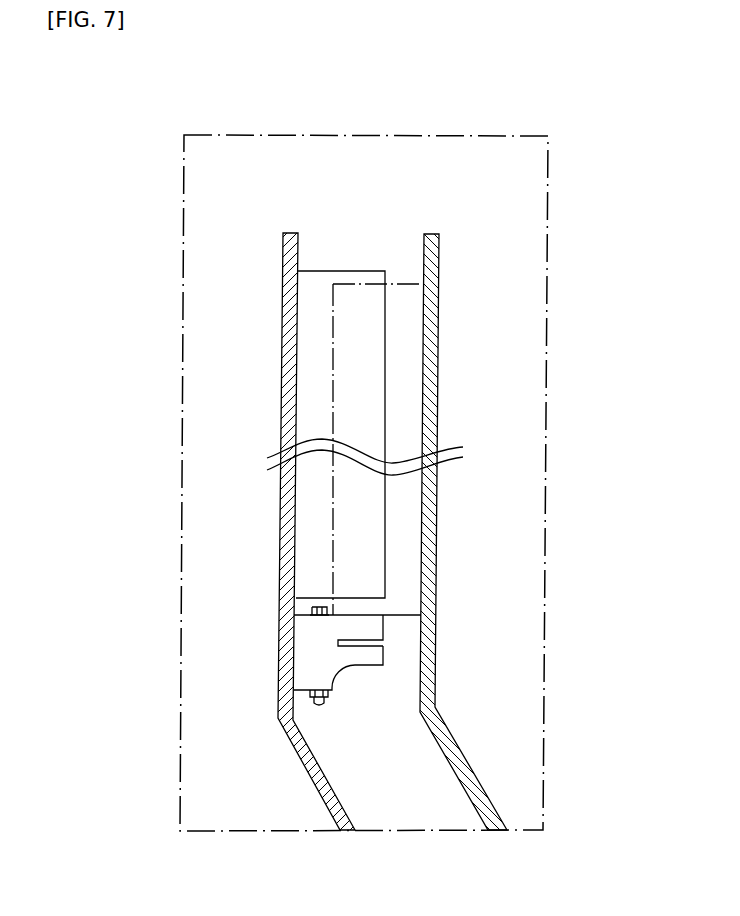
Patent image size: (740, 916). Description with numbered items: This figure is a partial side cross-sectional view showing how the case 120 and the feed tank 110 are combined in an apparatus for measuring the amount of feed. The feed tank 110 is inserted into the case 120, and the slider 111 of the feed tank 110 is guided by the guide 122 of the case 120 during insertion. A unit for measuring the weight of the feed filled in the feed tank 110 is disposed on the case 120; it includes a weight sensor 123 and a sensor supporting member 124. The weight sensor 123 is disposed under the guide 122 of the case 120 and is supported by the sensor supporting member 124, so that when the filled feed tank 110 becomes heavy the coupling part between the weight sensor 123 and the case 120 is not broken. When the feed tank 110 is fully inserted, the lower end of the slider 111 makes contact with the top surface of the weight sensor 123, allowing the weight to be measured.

The feed tank 110 is at (440, 310).
The slider 111 is at (402, 405).
The case 120 is at (292, 333).
The guide 122 is at (313, 402).
The weight sensor 123 is at (305, 625).
The sensor supporting member 124 is at (308, 665).